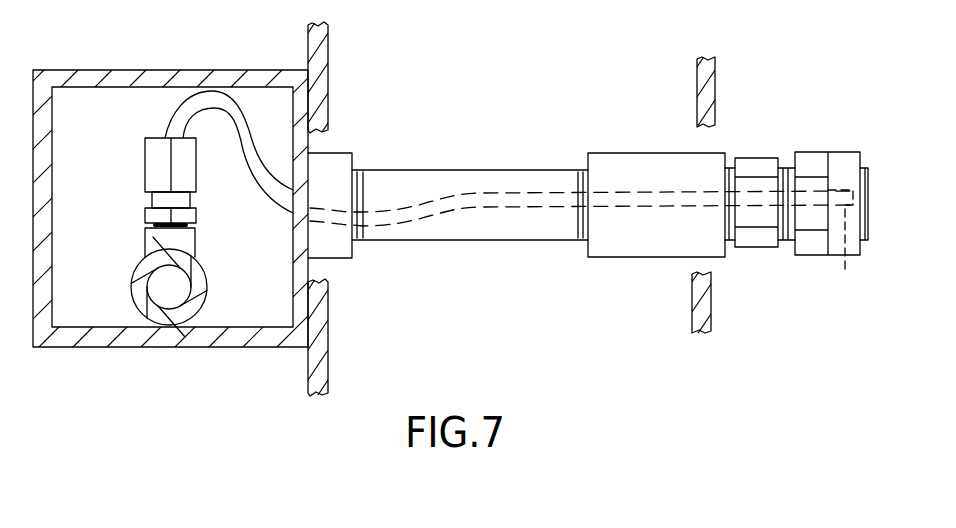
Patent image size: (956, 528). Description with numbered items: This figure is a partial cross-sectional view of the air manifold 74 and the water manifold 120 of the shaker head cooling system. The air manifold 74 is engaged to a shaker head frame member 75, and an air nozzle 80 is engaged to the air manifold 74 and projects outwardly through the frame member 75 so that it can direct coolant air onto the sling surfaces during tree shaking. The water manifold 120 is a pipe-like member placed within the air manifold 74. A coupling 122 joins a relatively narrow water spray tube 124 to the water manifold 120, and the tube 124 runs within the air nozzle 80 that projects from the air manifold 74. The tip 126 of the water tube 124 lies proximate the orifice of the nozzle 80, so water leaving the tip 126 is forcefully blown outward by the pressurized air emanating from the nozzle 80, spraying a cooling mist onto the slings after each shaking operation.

The air manifold 74 is at (137, 70).
The shaker head frame member 75 is at (330, 55).
The air nozzle 80 is at (868, 185).
The water manifold 120 is at (205, 296).
The coupling 122 is at (145, 195).
The water spray tube 124 is at (258, 152).
The tip 126 is at (850, 244).